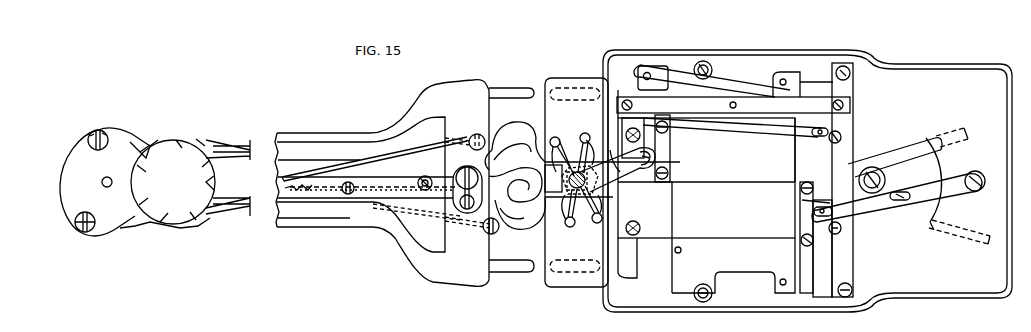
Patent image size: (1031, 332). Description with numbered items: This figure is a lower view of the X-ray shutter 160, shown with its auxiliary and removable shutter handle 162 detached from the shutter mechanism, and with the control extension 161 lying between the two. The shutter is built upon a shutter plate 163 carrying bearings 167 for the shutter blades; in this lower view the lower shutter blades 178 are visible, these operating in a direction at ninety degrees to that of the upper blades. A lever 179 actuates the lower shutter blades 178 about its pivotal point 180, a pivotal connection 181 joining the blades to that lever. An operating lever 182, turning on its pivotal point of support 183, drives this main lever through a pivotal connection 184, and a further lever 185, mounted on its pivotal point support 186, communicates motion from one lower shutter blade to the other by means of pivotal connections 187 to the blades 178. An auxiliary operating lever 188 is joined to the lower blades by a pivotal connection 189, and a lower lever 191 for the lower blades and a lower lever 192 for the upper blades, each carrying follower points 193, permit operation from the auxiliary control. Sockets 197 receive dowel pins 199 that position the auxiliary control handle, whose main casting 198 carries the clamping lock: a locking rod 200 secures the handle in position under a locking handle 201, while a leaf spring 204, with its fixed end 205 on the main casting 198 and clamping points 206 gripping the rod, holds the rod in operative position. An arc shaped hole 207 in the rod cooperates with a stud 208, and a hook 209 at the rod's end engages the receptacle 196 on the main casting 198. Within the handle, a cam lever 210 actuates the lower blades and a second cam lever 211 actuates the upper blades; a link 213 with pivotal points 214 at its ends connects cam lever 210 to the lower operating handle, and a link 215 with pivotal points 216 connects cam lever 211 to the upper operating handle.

The X-ray shutter 160 is at (660, 50).
The control extension 161 is at (570, 78).
The auxiliary and removable shutter handle 162 is at (420, 258).
The shutter plate 163 is at (805, 85).
The bearings 167 is at (670, 172).
The lower shutter blades 178 is at (754, 175).
The lever 179 is at (876, 215).
The pivotal point 180 is at (975, 170).
The pivotal connection 181 is at (812, 215).
The operating lever 182 is at (929, 226).
The pivotal point of support 183 is at (893, 165).
The pivotal connection 184 is at (900, 202).
The lever 185 is at (740, 85).
The pivotal point support 186 is at (735, 100).
The pivotal connections 187 is at (640, 75).
The auxiliary operating lever 188 is at (630, 170).
The pivotal connection 189 is at (641, 165).
The lower lever 191 is at (570, 172).
The lower lever 192 is at (587, 143).
The follower points 193 is at (557, 137).
The receptacle 196 is at (568, 226).
The sockets 197 is at (548, 95).
The main casting 198 is at (305, 133).
The dowel pins 199 is at (505, 88).
The locking rod 200 is at (307, 202).
The locking handle 201 is at (195, 152).
The leaf spring 204 is at (335, 192).
The fixed end 205 is at (430, 168).
The clamping points 206 is at (348, 182).
The arc shaped hole 207 is at (464, 226).
The stud 208 is at (466, 166).
The hook 209 is at (526, 180).
The cam lever 210 is at (520, 218).
The cam lever 211 is at (515, 140).
The link 213 is at (148, 140).
The pivotal points 214 is at (105, 133).
The link 215 is at (140, 232).
The pivotal points 216 is at (70, 222).